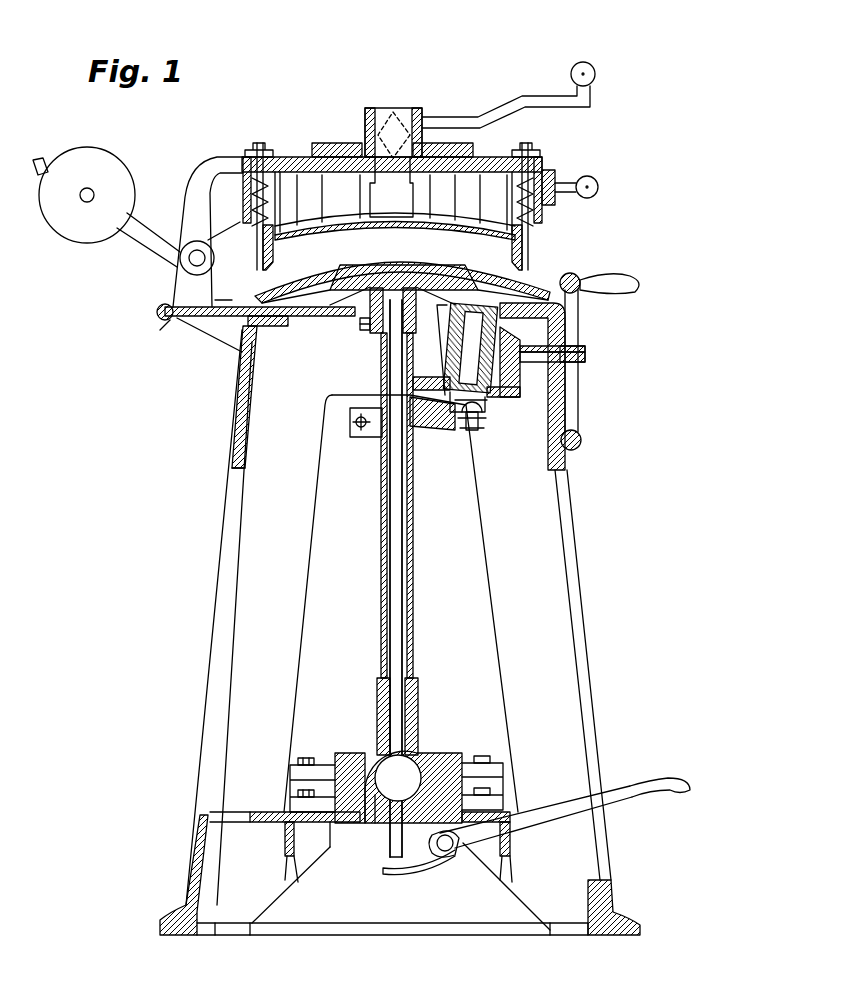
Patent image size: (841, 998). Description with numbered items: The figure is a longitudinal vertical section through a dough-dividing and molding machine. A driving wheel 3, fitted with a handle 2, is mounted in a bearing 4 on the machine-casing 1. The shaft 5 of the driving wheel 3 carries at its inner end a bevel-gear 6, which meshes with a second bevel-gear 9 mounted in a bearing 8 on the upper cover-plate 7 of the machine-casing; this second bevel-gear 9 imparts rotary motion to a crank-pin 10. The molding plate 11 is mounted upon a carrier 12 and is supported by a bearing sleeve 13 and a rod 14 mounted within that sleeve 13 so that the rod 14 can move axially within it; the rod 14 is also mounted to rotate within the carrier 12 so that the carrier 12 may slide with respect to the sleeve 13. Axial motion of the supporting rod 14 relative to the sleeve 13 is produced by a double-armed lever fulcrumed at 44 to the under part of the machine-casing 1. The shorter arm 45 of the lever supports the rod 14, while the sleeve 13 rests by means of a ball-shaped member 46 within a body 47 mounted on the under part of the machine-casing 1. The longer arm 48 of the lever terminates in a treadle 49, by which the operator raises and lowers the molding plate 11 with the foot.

The machine-casing 1 is at (573, 530).
The handle 2 is at (624, 280).
The driving wheel 3 is at (582, 324).
The bearing 4 is at (575, 348).
The shaft 5 is at (592, 363).
The bevel-gear 6 is at (520, 394).
The upper cover-plate 7 is at (160, 322).
The bearing 8 is at (446, 353).
The second bevel-gear 9 is at (510, 400).
The crank-pin 10 is at (466, 433).
The molding plate 11 is at (402, 276).
The carrier 12 is at (373, 336).
The bearing sleeve 13 is at (416, 553).
The rod 14 is at (412, 602).
The fulcrum 44 is at (450, 857).
The shorter arm 45 is at (410, 872).
The ball-shaped member 46 is at (425, 752).
The body 47 is at (466, 762).
The longer arm 48 is at (555, 812).
The treadle 49 is at (652, 784).